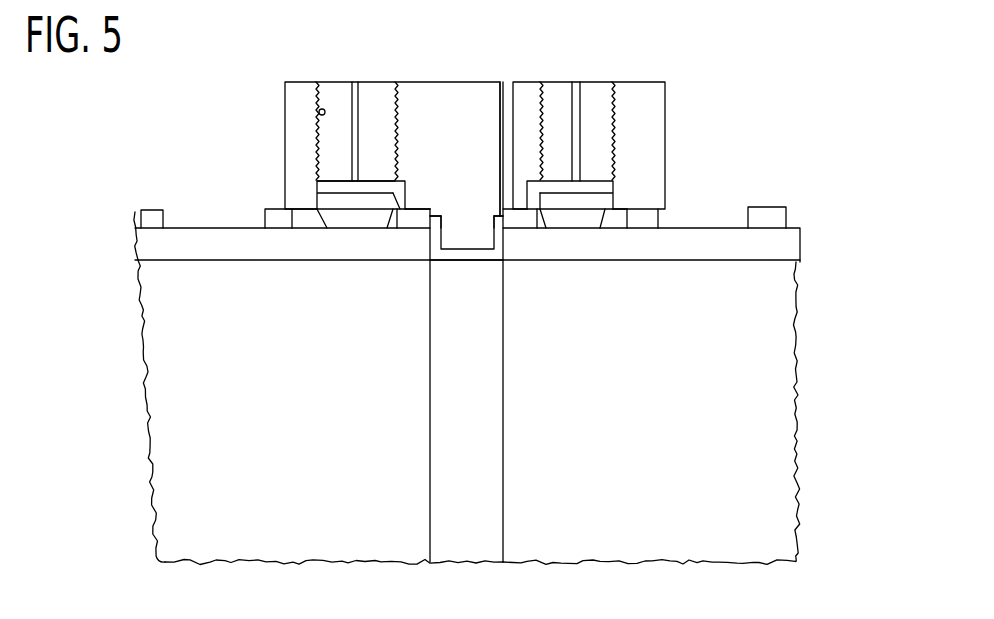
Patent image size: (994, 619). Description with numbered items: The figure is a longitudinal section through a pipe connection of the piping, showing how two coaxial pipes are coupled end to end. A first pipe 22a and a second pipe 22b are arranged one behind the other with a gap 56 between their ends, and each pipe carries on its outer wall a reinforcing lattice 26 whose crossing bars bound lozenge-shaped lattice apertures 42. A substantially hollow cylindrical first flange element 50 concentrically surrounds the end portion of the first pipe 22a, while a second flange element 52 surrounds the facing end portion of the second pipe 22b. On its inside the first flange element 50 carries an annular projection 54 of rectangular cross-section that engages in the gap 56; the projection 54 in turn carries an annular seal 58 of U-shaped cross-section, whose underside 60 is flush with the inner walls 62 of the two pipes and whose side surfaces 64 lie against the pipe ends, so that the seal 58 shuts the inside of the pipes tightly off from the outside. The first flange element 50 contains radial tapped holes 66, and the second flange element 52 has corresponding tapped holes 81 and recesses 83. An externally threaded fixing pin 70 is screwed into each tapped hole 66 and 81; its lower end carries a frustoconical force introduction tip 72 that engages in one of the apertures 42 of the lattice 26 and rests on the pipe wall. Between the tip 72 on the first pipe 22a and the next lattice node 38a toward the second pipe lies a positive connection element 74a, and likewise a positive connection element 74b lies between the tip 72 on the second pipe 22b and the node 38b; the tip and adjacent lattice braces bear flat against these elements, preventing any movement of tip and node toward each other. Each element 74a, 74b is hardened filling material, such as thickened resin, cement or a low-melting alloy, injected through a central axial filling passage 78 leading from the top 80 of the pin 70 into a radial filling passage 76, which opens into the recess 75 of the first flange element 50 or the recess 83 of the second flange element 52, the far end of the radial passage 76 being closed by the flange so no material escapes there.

The first pipe 22a is at (140, 217).
The second pipe 22b is at (762, 247).
The lattice 26 is at (175, 243).
The inner walls 62 is at (195, 264).
The lattice aperture 42 is at (302, 220).
The force introduction tip 72 is at (343, 220).
The positive connection element 74a is at (394, 210).
The positive connection element 74b is at (583, 220).
The lattice node 38a is at (410, 223).
The lattice node 38b is at (523, 220).
The side surfaces 64 is at (428, 243).
The underside 60 is at (454, 242).
The annular seal 58 is at (488, 263).
The gap 56 is at (455, 537).
The first flange element 50 is at (457, 95).
The second flange element 52 is at (642, 108).
The annular projection 54 is at (467, 235).
The radial filling passage 76 is at (323, 183).
The recess 75 is at (400, 181).
The recess 83 is at (530, 187).
The central axial filling passage 78 is at (353, 92).
The top 80 is at (372, 82).
The tapped holes 66 is at (318, 113).
The tapped holes 81 is at (540, 90).
The fixing pin 70 is at (335, 152).